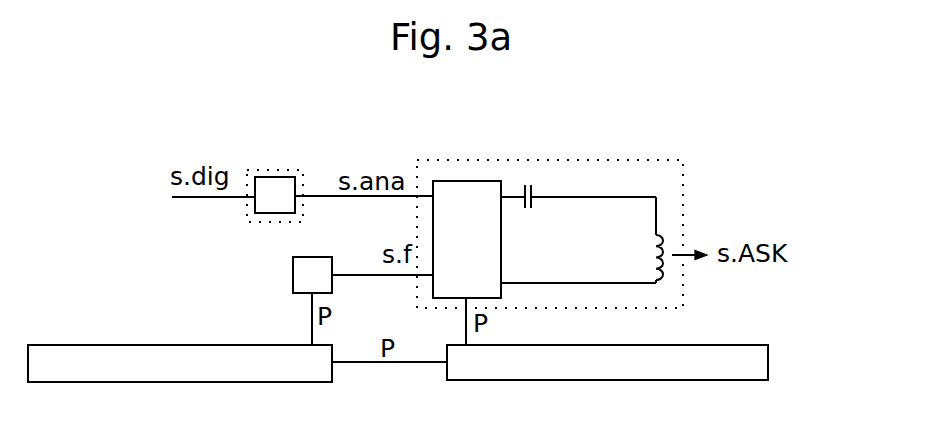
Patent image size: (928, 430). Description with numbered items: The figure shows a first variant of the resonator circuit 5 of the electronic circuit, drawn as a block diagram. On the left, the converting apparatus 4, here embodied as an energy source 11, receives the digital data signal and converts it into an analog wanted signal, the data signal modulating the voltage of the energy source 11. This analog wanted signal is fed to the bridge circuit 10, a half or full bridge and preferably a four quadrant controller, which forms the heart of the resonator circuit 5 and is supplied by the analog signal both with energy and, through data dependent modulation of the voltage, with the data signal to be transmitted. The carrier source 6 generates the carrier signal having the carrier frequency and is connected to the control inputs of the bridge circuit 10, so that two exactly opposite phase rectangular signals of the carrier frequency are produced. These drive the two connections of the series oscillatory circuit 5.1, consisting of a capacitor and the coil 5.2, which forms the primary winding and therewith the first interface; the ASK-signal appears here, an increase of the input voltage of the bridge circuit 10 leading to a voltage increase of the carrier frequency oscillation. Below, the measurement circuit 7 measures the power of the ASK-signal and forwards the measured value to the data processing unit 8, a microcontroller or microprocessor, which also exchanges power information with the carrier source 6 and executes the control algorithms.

The converting apparatus 4 is at (226, 220).
The energy source 11 is at (278, 187).
The resonator circuit 5 is at (705, 207).
The bridge circuit 10 is at (467, 192).
The series oscillatory circuit 5.1 is at (690, 207).
The coil 5.2 is at (682, 312).
The carrier source 6 is at (308, 273).
The data processing unit 8 is at (180, 363).
The measurement circuit 7 is at (607, 362).